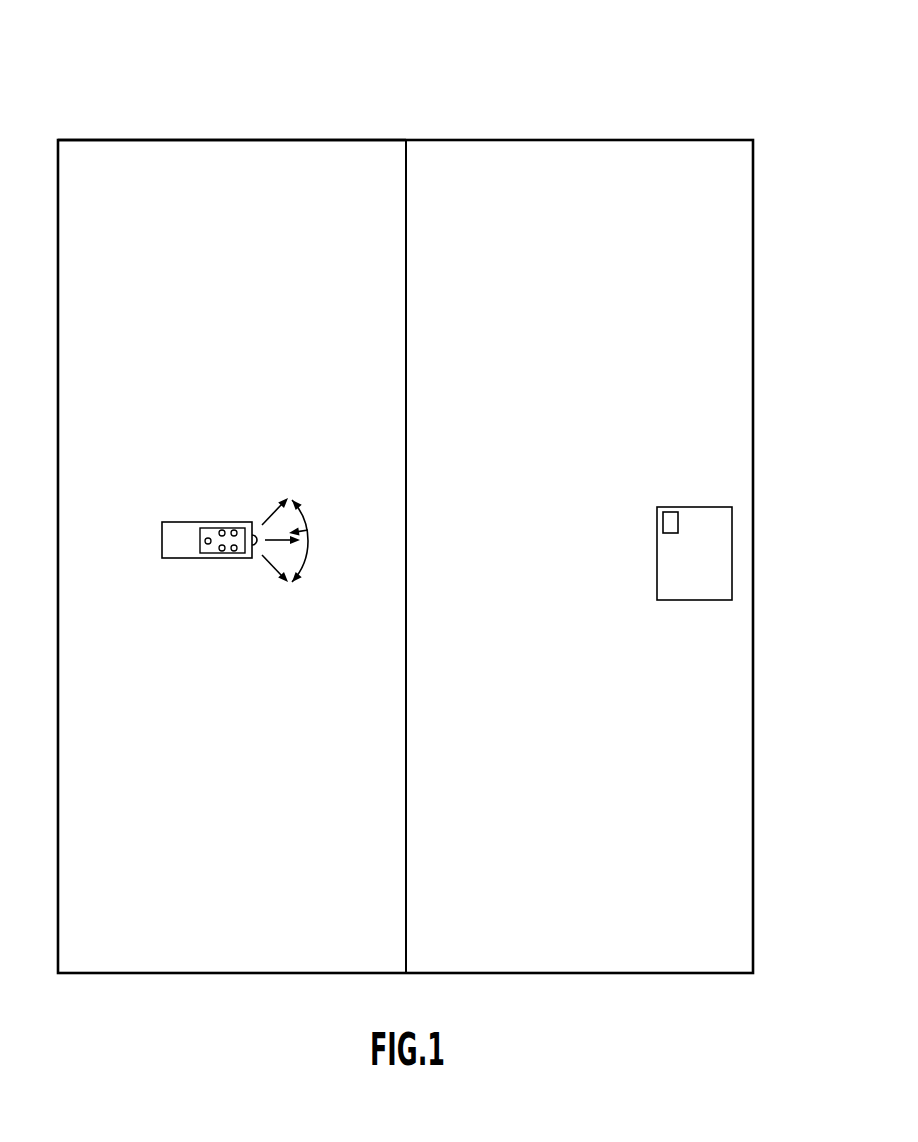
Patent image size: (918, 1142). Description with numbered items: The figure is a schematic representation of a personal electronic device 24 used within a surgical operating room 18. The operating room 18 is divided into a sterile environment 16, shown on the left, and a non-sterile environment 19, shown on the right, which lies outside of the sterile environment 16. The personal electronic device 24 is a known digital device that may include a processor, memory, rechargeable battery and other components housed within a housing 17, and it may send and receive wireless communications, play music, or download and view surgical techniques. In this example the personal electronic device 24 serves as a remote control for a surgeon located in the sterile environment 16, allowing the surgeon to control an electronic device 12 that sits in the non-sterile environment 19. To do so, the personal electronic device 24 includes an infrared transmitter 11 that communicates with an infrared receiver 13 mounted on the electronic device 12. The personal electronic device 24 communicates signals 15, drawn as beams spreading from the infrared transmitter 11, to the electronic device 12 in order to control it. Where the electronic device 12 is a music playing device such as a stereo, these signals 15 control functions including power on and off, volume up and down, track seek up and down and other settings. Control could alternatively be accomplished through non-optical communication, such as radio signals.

The infrared transmitter 11 is at (254, 525).
The electronic device 12 is at (707, 560).
The infrared receiver 13 is at (672, 512).
The signals 15 is at (308, 530).
The sterile environment 16 is at (187, 140).
The housing 17 is at (178, 558).
The surgical operating room 18 is at (402, 84).
The non-sterile environment 19 is at (577, 140).
The personal electronic device 24 is at (199, 497).